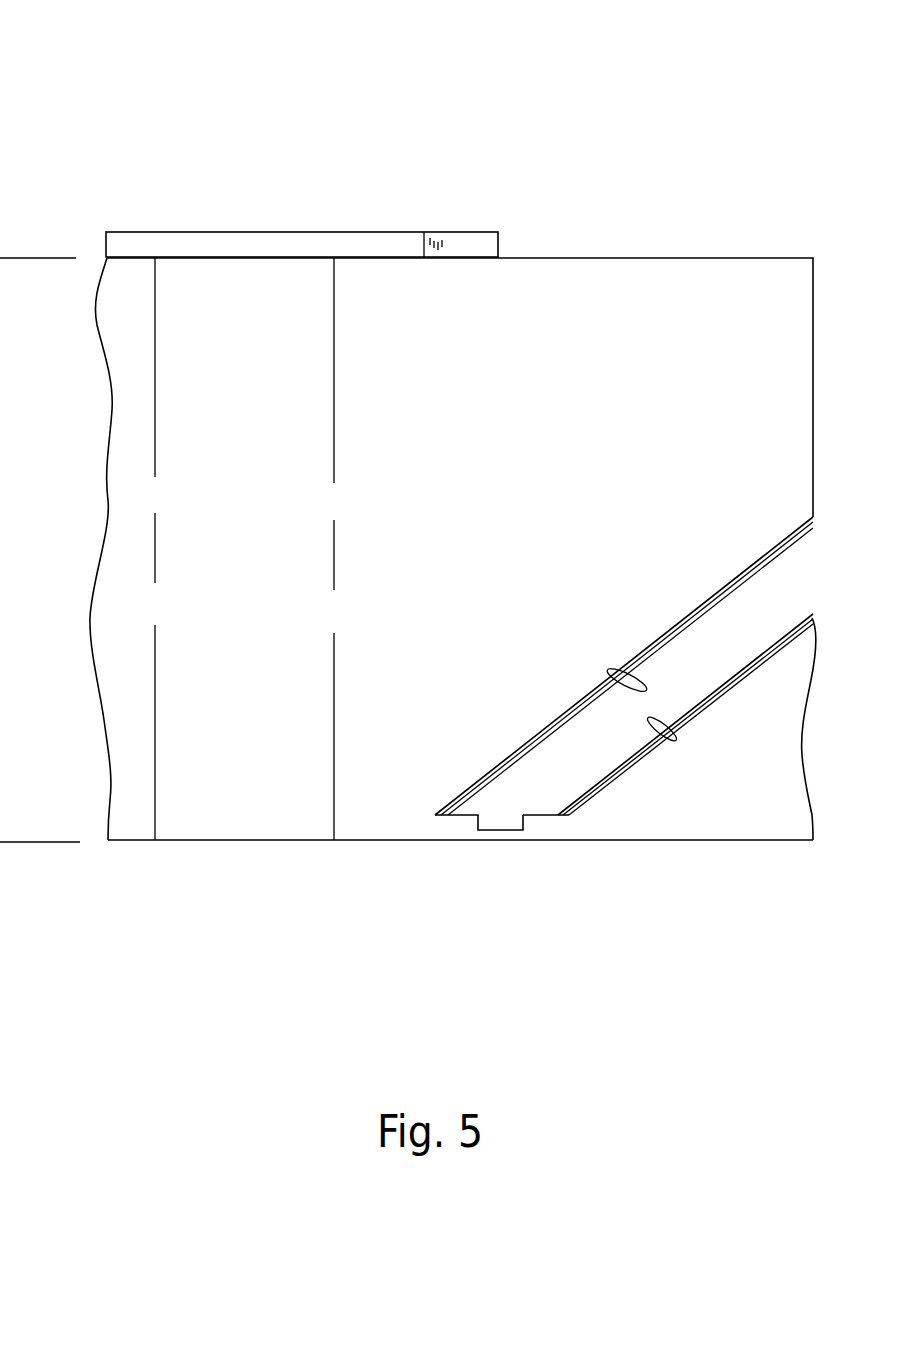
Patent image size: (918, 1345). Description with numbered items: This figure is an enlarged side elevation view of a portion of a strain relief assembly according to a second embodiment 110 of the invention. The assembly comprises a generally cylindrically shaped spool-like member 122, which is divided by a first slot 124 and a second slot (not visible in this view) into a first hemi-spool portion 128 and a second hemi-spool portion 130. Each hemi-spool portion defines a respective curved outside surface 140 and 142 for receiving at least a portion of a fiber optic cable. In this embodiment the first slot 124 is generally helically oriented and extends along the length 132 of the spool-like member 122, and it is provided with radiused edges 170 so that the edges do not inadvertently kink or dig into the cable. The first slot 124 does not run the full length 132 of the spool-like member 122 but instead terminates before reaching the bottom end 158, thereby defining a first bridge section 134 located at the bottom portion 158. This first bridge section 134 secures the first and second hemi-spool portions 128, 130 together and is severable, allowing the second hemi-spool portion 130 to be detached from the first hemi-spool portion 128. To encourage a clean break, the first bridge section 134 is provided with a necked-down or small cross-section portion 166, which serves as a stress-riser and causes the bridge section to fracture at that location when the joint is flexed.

The strain relief assembly second embodiment 110 is at (148, 83).
The spool-like member 122 is at (263, 229).
The first slot 124 is at (773, 646).
The first hemi-spool portion 128 is at (192, 842).
The second hemi-spool portion 130 is at (660, 842).
The length of the spool-like member 132 is at (33, 842).
The first bridge section 134 is at (548, 815).
The curved outside surface of first hemi-spool portion 140 is at (258, 489).
The curved outside surface of second hemi-spool portion 142 is at (783, 729).
The bottom end of the spool-like member 158 is at (375, 842).
The necked-down portion 166 is at (500, 828).
The radiused edges 170 is at (607, 672).